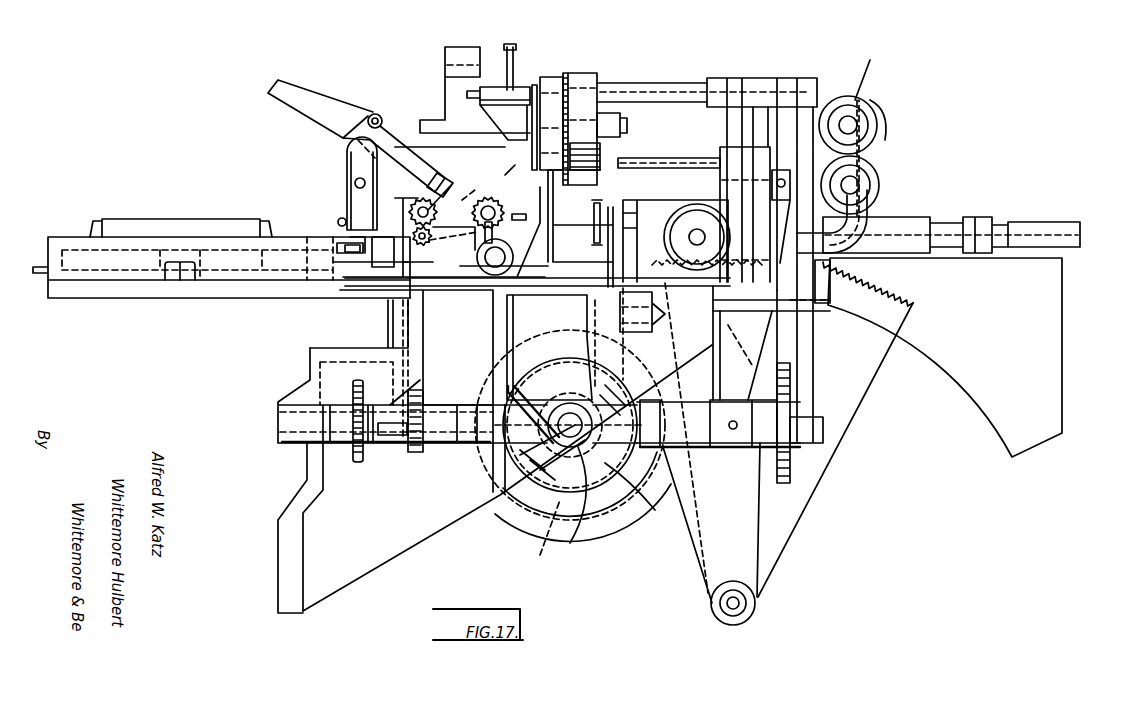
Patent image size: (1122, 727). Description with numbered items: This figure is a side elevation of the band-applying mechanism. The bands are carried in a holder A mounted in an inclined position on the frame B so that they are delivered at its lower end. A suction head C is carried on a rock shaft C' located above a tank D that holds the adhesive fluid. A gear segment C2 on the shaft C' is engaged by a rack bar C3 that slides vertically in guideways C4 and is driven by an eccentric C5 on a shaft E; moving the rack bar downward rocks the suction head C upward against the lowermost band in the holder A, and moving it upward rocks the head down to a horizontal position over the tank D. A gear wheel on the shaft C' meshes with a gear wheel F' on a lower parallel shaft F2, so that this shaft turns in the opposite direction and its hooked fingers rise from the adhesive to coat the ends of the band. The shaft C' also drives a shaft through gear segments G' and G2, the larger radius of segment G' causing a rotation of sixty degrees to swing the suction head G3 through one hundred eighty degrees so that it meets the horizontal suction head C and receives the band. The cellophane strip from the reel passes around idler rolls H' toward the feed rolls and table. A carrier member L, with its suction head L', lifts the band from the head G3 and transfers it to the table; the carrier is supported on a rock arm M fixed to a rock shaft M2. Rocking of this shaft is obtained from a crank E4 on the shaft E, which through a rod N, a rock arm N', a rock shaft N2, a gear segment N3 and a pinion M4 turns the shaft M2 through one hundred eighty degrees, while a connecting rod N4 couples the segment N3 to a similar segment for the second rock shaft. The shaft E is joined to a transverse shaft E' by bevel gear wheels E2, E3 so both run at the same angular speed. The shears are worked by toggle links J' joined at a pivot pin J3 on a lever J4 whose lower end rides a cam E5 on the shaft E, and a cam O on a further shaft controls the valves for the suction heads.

The holder A is at (345, 110).
The frame B is at (262, 305).
The suction head C is at (421, 197).
The rock shaft C' is at (451, 183).
The gear segment C2 is at (410, 200).
The rack bar C3 is at (397, 207).
The guideways C4 is at (388, 332).
The eccentric C5 is at (418, 452).
The tank D is at (422, 391).
The shaft E is at (380, 480).
The shaft E' is at (574, 462).
The bevel gear wheel E2 is at (545, 490).
The bevel gear wheel E3 is at (583, 527).
The crank E4 is at (793, 470).
The cam E5 is at (680, 390).
The gear wheel F' is at (471, 248).
The shaft F2 is at (440, 243).
The gear segment G' is at (477, 184).
The gear segment G2 is at (498, 203).
The suction head G3 is at (522, 214).
The idler rolls H' is at (850, 156).
The toggle links J' is at (565, 341).
The pivot pin J3 is at (550, 295).
The lever J4 is at (652, 335).
The carrier member L is at (466, 92).
The suction head L' is at (506, 164).
The rock arm M is at (545, 80).
The rock shaft M2 is at (686, 156).
The pinion M4 is at (590, 214).
The rod N is at (703, 398).
The rock arm N' is at (775, 238).
The rock shaft N2 is at (680, 80).
The gear segment N3 is at (620, 108).
The connecting rod N4 is at (622, 130).
The cam O is at (610, 470).